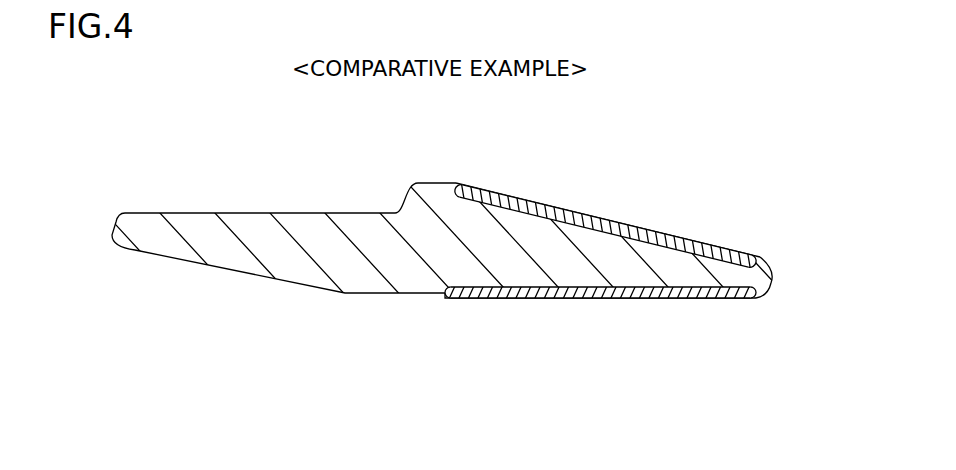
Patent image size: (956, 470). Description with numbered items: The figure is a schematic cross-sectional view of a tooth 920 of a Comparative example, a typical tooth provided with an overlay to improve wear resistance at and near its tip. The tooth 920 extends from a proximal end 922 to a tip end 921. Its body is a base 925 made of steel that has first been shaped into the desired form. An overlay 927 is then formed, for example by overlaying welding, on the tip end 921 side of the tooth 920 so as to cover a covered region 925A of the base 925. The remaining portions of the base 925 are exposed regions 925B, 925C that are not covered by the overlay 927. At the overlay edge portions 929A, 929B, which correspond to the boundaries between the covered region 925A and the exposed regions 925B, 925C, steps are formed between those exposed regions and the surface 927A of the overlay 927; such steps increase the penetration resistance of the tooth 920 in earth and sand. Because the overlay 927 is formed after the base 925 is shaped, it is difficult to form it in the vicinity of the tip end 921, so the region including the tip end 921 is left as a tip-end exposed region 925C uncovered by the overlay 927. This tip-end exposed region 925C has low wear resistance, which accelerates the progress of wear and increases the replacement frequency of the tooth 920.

The tooth 920 is at (648, 148).
The tip end 921 is at (773, 278).
The proximal end 922 is at (110, 228).
The base 925 is at (190, 231).
The covered region 925A is at (562, 208).
The exposed region 925B is at (240, 213).
The tip-end exposed region 925C is at (763, 291).
The overlay 927 is at (688, 240).
The surface of the overlay 927A is at (508, 194).
The overlay edge portion 929A is at (759, 249).
The overlay edge portion 929B is at (448, 173).